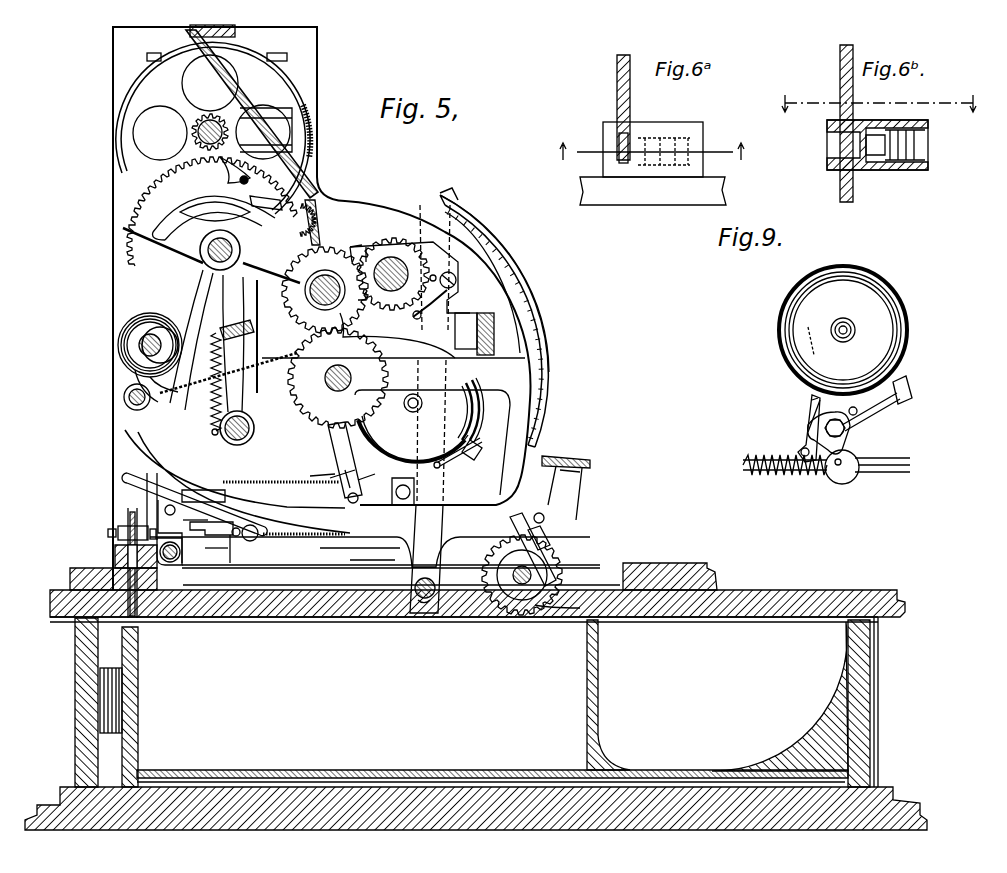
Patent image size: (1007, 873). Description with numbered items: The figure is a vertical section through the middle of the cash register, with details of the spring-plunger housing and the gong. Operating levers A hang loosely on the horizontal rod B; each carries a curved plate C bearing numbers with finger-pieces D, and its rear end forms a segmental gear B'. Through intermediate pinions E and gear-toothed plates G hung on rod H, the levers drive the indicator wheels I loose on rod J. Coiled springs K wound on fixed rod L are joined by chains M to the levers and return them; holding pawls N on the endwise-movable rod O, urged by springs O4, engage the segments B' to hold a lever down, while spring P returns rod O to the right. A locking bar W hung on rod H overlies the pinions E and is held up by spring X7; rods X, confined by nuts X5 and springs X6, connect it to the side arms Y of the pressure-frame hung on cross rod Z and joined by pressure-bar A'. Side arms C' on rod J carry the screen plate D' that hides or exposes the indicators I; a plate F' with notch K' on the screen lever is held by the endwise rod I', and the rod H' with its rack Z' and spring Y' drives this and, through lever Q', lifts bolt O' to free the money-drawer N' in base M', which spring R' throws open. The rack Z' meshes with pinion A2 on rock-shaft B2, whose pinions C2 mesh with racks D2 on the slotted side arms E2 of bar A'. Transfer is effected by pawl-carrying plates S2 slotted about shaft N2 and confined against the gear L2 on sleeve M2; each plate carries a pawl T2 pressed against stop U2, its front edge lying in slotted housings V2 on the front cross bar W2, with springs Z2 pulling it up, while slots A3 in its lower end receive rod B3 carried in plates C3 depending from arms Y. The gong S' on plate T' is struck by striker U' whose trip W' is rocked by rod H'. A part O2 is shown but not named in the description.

In FIG. 5, the operating levers A is at (366, 308).
In FIG. 5, the indicator wheels I is at (213, 128).
In FIG. 5, the side arms C' is at (266, 130).
In FIG. 5, the rod J is at (196, 136).
In FIG. 5, the coiled spring X7 is at (225, 108).
In FIG. 5, the screen plate D' is at (323, 131).
In FIG. 5, the rods X is at (244, 176).
In FIG. 5, the nuts X5 is at (236, 187).
In FIG. 5, the coiled springs X6 is at (262, 208).
In FIG. 5, the gear-toothed plates G is at (212, 211).
In FIG. 5, the rod H is at (211, 255).
In FIG. 5, the coiled springs K is at (181, 340).
In FIG. 5, the fixed rod L is at (136, 332).
In FIG. 5, the cross rod Z is at (122, 397).
In FIG. 5, the chains M is at (228, 370).
In FIG. 5, the holding pawls N is at (234, 375).
In FIG. 5, the rod O is at (249, 361).
In FIG. 5, the springs O4 is at (205, 437).
In FIG. 5, the side arms Y is at (240, 483).
In FIG. 5, the spring P is at (312, 297).
In FIG. 5, the locking bar W is at (323, 222).
In FIG. 5, the sleeve M2 is at (357, 258).
In FIG. 5, the shaft N2 is at (388, 258).
In FIG. 5, the bracket O2 is at (410, 265).
In FIG. 5, the stop U2 is at (443, 271).
In FIG. 5, the pawl T2 is at (430, 303).
In FIG. 5, the gear L2 is at (400, 317).
In FIG. 5, the pawl-carrying plate S2 is at (430, 409).
In FIG. 5, the housings V2 is at (467, 321).
In FIG. 5, the front cross bar W2 is at (495, 323).
In FIG. 5, the intermediate pinions E is at (356, 336).
In FIG. 5, the segmental gear B' is at (338, 377).
In FIG. 5, the horizontal rod B is at (347, 378).
In FIG. 5, the plate T' is at (342, 466).
In FIG. 5, the alarm gong S' is at (413, 428).
In FIG. 9, the alarm gong S' is at (843, 330).
In FIG. 5, the coiled springs Z2 is at (480, 408).
In FIG. 5, the striker U' is at (466, 449).
In FIG. 5, the finger-pieces D is at (499, 317).
In FIG. 5, the curved plates C is at (504, 284).
In FIG. 5, the pressure-bar A' is at (567, 478).
In FIG. 5, the trip W' is at (397, 503).
In FIG. 5, the side plates or supporting arms E2 is at (539, 512).
In FIG. 5, the racks D2 is at (512, 528).
In FIG. 5, the rack Z' is at (551, 536).
In FIG. 5, the supporting plates C3 is at (402, 548).
In FIG. 5, the pinions C2 is at (522, 575).
In FIG. 5, the rock-shaft B2 is at (522, 581).
In FIG. 5, the rod B3 is at (434, 588).
In FIG. 5, the pinion A2 is at (550, 594).
In FIG. 5, the slots A3 is at (412, 598).
In FIG. 5, the spring Y' is at (304, 549).
In FIG. 5, the rod H' is at (220, 541).
In FIG. 5, the notch K' is at (211, 567).
In FIG. 5, the plate F' is at (233, 560).
In FIG. 5, the endwise movable rod I' is at (174, 551).
In FIG. 5, the lever Q' is at (122, 563).
In FIG. 5, the bolt O' is at (121, 555).
In FIG. 5, the money-drawer N' is at (476, 696).
In FIG. 5, the base M' is at (68, 702).
In FIG. 5, the spring R' is at (132, 707).